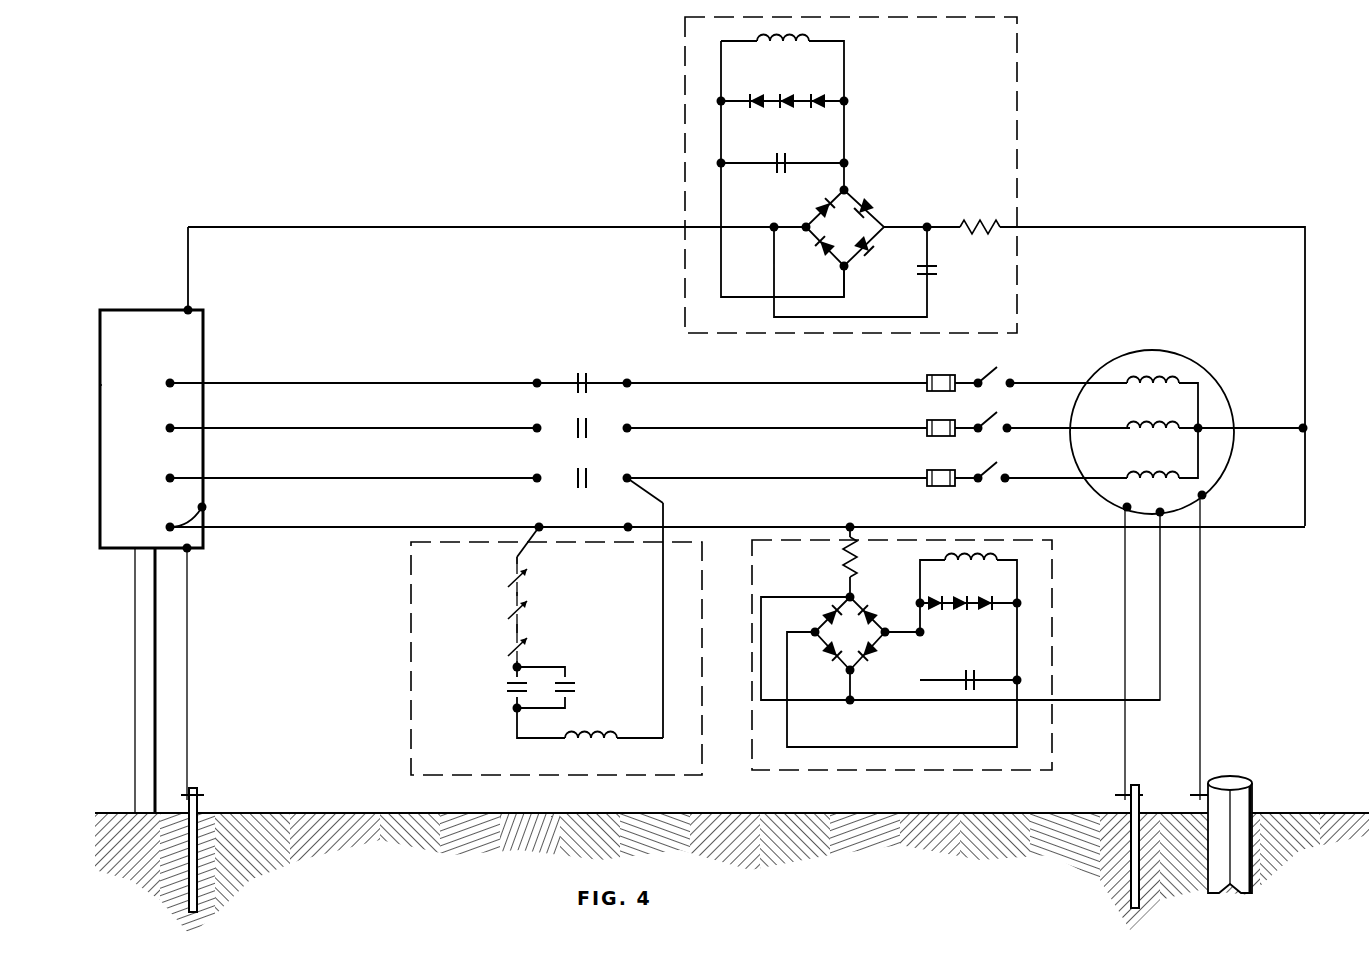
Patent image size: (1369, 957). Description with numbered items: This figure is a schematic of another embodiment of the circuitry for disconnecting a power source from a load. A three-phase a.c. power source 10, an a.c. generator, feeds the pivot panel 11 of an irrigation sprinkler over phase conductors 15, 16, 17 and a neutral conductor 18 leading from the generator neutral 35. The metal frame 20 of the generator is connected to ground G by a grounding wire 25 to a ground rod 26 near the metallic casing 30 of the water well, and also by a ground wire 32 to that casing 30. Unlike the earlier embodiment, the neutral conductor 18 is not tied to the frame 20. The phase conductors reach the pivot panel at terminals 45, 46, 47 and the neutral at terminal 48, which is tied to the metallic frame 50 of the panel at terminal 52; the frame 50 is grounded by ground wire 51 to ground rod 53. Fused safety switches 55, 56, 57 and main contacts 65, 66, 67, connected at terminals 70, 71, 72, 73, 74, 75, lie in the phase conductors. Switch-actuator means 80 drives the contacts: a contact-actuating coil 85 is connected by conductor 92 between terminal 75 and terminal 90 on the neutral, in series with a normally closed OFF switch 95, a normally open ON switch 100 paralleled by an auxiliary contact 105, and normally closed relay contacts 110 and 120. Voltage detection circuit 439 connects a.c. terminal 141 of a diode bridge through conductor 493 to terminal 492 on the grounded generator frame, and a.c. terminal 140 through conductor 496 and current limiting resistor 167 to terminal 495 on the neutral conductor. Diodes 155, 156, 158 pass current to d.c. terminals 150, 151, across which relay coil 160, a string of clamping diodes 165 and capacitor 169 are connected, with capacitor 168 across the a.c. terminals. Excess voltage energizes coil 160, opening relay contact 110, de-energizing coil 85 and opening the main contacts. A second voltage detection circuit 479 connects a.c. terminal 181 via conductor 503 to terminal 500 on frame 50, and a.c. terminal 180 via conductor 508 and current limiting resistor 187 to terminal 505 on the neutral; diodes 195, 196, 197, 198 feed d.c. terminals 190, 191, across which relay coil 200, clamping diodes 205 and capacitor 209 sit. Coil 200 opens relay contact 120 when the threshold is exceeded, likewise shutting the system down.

The three-phase a.c. power source 10 is at (1167, 417).
The pivot panel 11 is at (132, 306).
The phase conductor 15 is at (412, 382).
The phase conductor 16 is at (408, 428).
The phase conductor 17 is at (403, 477).
The neutral conductor 18 is at (396, 526).
The metal frame 20 is at (1203, 363).
The grounding wire 25 is at (1126, 724).
The ground rod 26 is at (1140, 792).
The metallic casing 30 is at (1254, 790).
The ground wire 32 is at (1201, 648).
The neutral 35 is at (1201, 425).
The terminal 45 is at (168, 380).
The terminal 46 is at (168, 429).
The terminal 47 is at (166, 479).
The terminal 48 is at (168, 527).
The metallic frame of the pivot panel 50 is at (100, 385).
The ground wire 51 is at (187, 702).
The terminal 52 is at (204, 506).
The ground rod 53 is at (203, 806).
The fused safety switch 55 is at (930, 375).
The fused safety switch 56 is at (930, 420).
The fused safety switch 57 is at (930, 470).
The main contact 65 is at (572, 372).
The main contact 66 is at (592, 426).
The main contact 67 is at (592, 475).
The terminal 70 is at (534, 380).
The terminal 71 is at (630, 380).
The terminal 72 is at (534, 426).
The terminal 73 is at (630, 426).
The terminal 74 is at (534, 476).
The terminal 75 is at (632, 475).
The switch-actuator means 80 is at (519, 639).
The contact-actuating coil 85 is at (594, 735).
The terminal 90 is at (540, 524).
The conductor 92 is at (662, 653).
The OFF switch 95 is at (526, 645).
The ON switch 100 is at (505, 687).
The auxiliary contact 105 is at (572, 682).
The relay contact 110 is at (526, 576).
The relay contact 120 is at (526, 609).
The a.c. terminal of the diode bridge 140 is at (862, 600).
The a.c. terminal of the diode bridge 141 is at (848, 672).
The d.c. terminal of the diode bridge 150 is at (931, 651).
The d.c. terminal of the diode bridge 151 is at (812, 631).
The intermediate diode 155 is at (874, 616).
The intermediate diode 156 is at (875, 658).
The intermediate diode 158 is at (824, 610).
The relay coil 160 is at (950, 562).
The string of clamping diodes 165 is at (950, 608).
The current limiting resistor 167 is at (845, 566).
The capacitor 168 is at (752, 660).
The capacitor 169 is at (962, 678).
The a.c. terminal of the diode bridge 180 is at (840, 234).
The a.c. terminal of the diode bridge 181 is at (805, 230).
The current limiting resistor 187 is at (976, 222).
The d.c. terminal of the diode bridge 190 is at (845, 188).
The d.c. terminal of the diode bridge 191 is at (845, 268).
The diode 195 is at (862, 200).
The diode 196 is at (812, 205).
The diode 197 is at (818, 250).
The diode 198 is at (868, 250).
The relay coil 200 is at (800, 38).
The string of clamping diodes 205 is at (787, 94).
The capacitor 209 is at (783, 153).
The voltage detection circuit 439 is at (931, 630).
The second voltage detection circuit 479 is at (884, 175).
The terminal 492 is at (1148, 492).
The conductor 493 is at (1161, 672).
The terminal 495 is at (851, 524).
The conductor 496 is at (848, 530).
The terminal 500 is at (191, 307).
The conductor 503 is at (514, 227).
The terminal 505 is at (1306, 425).
The conductor 508 is at (1194, 226).
The ground G is at (1082, 812).